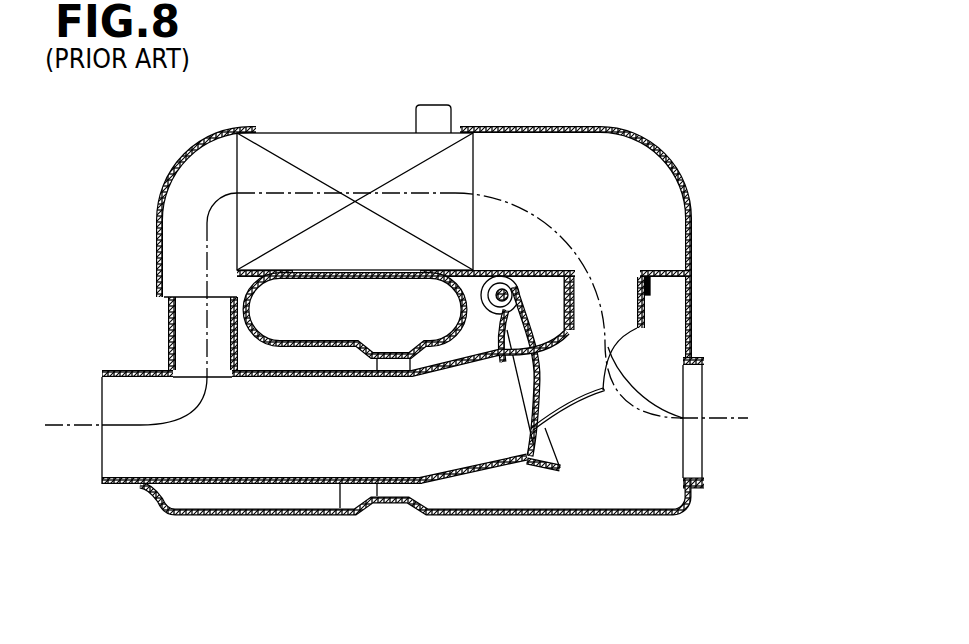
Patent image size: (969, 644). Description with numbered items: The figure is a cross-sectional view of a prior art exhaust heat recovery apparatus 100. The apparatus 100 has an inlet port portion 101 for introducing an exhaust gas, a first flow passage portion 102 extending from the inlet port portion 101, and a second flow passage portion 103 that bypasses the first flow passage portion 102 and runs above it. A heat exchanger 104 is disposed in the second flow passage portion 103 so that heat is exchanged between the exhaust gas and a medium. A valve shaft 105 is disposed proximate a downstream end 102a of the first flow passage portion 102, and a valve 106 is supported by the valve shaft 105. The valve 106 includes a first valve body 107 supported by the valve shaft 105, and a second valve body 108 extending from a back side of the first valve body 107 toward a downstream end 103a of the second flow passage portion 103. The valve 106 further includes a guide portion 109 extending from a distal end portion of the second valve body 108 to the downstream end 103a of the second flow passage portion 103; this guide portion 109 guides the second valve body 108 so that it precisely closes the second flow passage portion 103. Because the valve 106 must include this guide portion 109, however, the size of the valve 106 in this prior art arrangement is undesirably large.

The exhaust heat recovery apparatus 100 is at (735, 144).
The inlet port portion 101 is at (115, 487).
The first flow passage portion 102 is at (340, 516).
The downstream end of the first flow passage portion 102a is at (508, 450).
The second flow passage portion 103 is at (157, 257).
The downstream end of the second flow passage portion 103a is at (637, 282).
The heat exchanger 104 is at (338, 133).
The valve shaft 105 is at (498, 280).
The valve 106 is at (588, 430).
The first valve body 107 is at (520, 395).
The second valve body 108 is at (603, 392).
The guide portion 109 is at (646, 303).